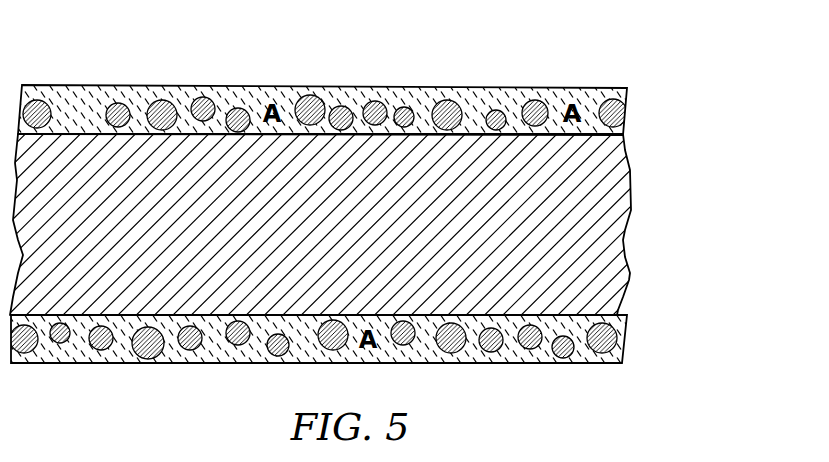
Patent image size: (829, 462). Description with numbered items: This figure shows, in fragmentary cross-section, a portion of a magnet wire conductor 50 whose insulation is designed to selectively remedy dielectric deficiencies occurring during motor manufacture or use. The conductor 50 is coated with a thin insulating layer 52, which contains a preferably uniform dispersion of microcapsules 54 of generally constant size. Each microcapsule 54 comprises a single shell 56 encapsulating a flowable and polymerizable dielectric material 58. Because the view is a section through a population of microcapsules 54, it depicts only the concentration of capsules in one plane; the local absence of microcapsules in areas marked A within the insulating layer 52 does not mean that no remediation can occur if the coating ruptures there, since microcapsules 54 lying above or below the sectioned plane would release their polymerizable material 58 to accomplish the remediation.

The conductor 50 is at (610, 228).
The insulating layer 52 is at (585, 97).
The microcapsules 54 is at (456, 103).
The single shell 56 is at (310, 95).
The polymerizable material 58 is at (405, 113).